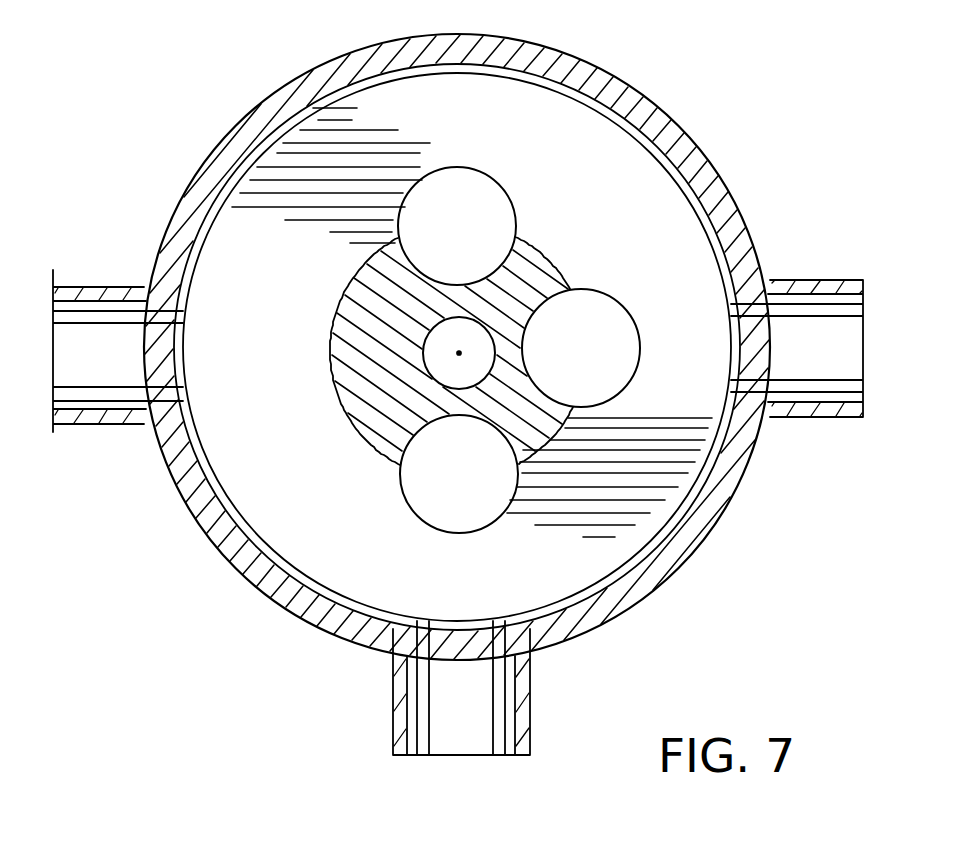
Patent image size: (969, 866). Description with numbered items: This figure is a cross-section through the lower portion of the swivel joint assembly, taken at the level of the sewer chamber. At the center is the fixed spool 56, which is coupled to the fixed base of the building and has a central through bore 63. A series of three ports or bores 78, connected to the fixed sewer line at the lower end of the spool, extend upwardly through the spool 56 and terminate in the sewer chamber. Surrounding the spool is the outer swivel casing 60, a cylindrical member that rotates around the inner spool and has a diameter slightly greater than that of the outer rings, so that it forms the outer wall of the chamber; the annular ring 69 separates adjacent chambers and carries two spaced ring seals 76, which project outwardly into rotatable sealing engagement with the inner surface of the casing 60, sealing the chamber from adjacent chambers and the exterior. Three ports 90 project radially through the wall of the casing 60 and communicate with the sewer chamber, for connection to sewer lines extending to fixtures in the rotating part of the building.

The swivel casing 60 is at (730, 497).
The ring seals 76 is at (640, 570).
The annular ring 69 is at (678, 232).
The fixed spool 56 is at (537, 267).
The ports or bores 78 is at (481, 226).
The central through bore 63 is at (440, 350).
The ports 90 is at (108, 290).